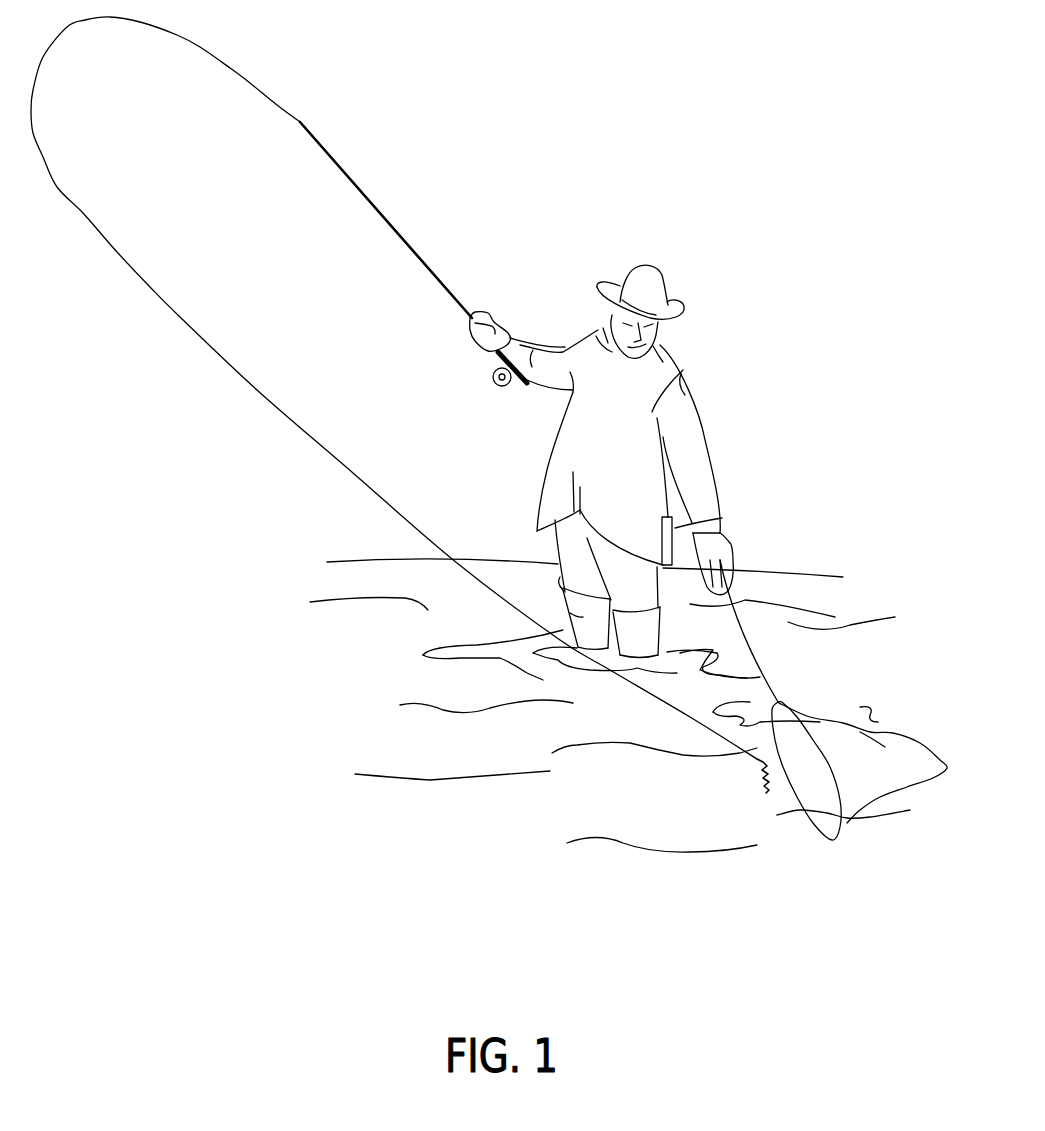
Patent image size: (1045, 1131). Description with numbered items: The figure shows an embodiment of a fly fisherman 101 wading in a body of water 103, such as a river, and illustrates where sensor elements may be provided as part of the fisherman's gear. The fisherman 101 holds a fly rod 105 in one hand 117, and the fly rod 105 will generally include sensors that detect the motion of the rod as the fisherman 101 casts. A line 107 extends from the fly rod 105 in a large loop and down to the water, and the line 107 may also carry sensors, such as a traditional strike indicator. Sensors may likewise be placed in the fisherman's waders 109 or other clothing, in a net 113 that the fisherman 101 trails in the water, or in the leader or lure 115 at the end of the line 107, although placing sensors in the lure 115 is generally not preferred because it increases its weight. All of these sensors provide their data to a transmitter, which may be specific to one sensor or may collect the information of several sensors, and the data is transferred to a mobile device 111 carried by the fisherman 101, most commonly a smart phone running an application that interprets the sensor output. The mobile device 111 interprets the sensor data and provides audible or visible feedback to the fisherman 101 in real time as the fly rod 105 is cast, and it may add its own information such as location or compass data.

The fly fisherman 101 is at (686, 383).
The body of water 103 is at (815, 597).
The fly rod 105 is at (410, 238).
The line 107 is at (354, 472).
The waders 109 is at (572, 640).
The mobile device 111 is at (715, 530).
The net 113 is at (778, 700).
The lure 115 is at (764, 777).
The hand 117 is at (497, 330).